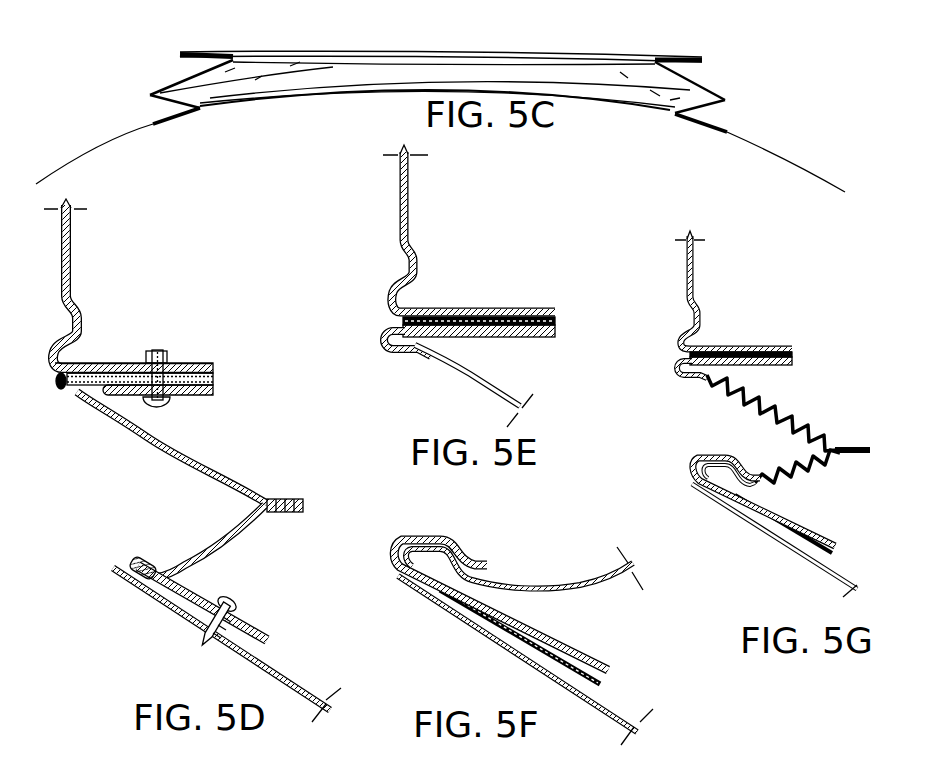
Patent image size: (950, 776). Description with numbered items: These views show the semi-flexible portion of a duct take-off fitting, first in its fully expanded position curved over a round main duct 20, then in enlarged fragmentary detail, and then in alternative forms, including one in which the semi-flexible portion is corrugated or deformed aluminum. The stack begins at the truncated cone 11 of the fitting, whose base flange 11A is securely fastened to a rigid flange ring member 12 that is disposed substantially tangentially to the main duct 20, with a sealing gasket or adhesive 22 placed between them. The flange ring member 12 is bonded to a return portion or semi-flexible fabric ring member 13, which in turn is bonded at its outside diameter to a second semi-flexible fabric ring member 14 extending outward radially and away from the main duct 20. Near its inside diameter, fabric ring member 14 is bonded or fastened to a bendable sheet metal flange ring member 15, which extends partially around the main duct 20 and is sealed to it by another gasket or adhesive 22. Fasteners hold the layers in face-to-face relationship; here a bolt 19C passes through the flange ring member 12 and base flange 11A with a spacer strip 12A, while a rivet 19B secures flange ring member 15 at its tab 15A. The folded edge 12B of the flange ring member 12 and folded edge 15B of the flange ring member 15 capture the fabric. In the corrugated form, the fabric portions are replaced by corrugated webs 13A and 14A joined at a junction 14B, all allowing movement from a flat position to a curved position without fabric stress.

In FIG. 5D, the cone 11 is at (71, 256).
In FIG. 5D, the base flange 11A is at (113, 363).
In FIG. 5E, the base flange 11A is at (445, 307).
In FIG. 5G, the base flange 11A is at (717, 345).
In FIG. 5C, the flange ring member 12 is at (700, 60).
In FIG. 5D, the flange ring member 12 is at (213, 378).
In FIG. 5E, the flange ring member 12 is at (550, 337).
In FIG. 5G, the flange ring member 12 is at (783, 362).
In FIG. 5D, the spacer strip 12A is at (213, 390).
In FIG. 5E, the folded edge of mounting strip 12B is at (393, 353).
In FIG. 5G, the folded edge of mounting strip 12B is at (680, 377).
In FIG. 5C, the semi-flexible fabric ring member 13 is at (708, 86).
In FIG. 5D, the semi-flexible fabric ring member 13 is at (260, 480).
In FIG. 5E, the semi-flexible fabric ring member 13 is at (490, 380).
In FIG. 5G, the corrugated upper web 13A is at (760, 392).
In FIG. 5C, the semi-flexible fabric ring member 14 is at (718, 105).
In FIG. 5D, the semi-flexible fabric ring member 14 is at (247, 532).
In FIG. 5F, the semi-flexible fabric ring member 14 is at (593, 587).
In FIG. 5G, the corrugated lower web 14A is at (807, 475).
In FIG. 5G, the web junction 14B is at (853, 452).
In FIG. 5C, the bendable sheet metal flange ring member 15 is at (730, 132).
In FIG. 5D, the bendable sheet metal flange ring member 15 is at (270, 643).
In FIG. 5F, the bendable sheet metal flange ring member 15 is at (557, 635).
In FIG. 5G, the bendable sheet metal flange ring member 15 is at (800, 520).
In FIG. 5D, the tab of lower strip 15A is at (253, 618).
In FIG. 5F, the folded edge of lower strip 15B is at (398, 557).
In FIG. 5G, the folded edge of lower strip 15B is at (692, 470).
In FIG. 5D, the rivet 19B is at (233, 603).
In FIG. 5D, the bolt 19C is at (160, 403).
In FIG. 5C, the main duct 20 is at (803, 170).
In FIG. 5D, the main duct 20 is at (280, 657).
In FIG. 5F, the main duct 20 is at (503, 633).
In FIG. 5G, the main duct 20 is at (833, 577).
In FIG. 5E, the sealing gasket or adhesive 22 is at (530, 315).
In FIG. 5F, the sealing gasket or adhesive 22 is at (600, 687).
In FIG. 5G, the sealing gasket or adhesive 22 is at (777, 350).